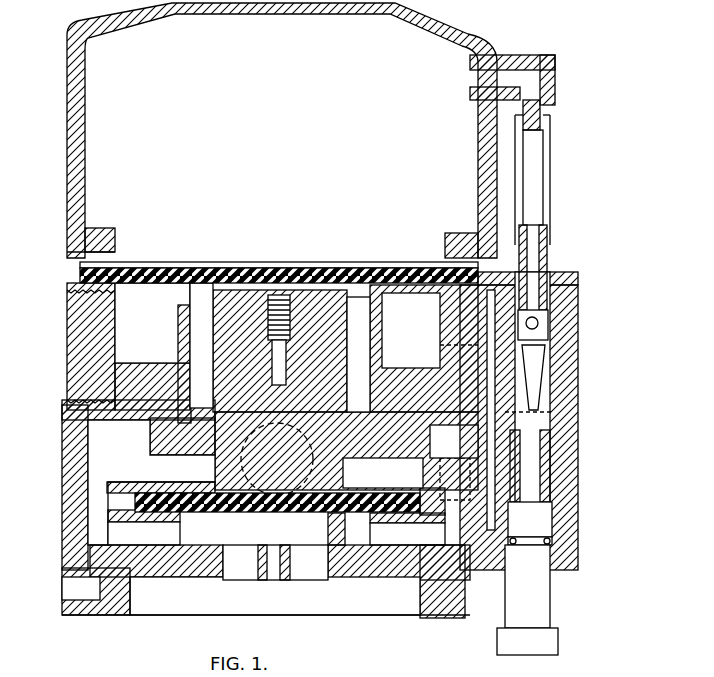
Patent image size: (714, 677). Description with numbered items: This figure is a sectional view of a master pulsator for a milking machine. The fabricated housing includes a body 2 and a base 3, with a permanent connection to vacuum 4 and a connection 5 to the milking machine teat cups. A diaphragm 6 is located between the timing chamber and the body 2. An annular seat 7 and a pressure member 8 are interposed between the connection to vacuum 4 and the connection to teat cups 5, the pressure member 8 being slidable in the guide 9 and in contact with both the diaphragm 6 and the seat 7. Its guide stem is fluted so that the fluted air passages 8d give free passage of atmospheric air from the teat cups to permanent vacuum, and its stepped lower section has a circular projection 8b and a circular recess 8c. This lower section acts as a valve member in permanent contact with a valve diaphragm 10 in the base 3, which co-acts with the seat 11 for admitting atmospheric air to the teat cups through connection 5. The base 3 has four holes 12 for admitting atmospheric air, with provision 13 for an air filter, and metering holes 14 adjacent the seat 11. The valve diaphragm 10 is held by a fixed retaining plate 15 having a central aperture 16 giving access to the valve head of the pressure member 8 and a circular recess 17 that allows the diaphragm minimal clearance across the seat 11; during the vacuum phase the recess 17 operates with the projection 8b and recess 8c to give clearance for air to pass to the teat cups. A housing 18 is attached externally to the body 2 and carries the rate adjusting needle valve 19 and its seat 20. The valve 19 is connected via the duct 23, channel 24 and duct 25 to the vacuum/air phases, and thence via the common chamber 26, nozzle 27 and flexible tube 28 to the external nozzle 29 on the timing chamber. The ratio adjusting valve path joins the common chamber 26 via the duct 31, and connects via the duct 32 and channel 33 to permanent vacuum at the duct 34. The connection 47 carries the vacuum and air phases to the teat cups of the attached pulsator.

The body 2 is at (62, 474).
The base 3 is at (62, 572).
The connection to vacuum 4 is at (67, 357).
The connection to teat cups 5 is at (277, 459).
The diaphragm 6 is at (215, 262).
The annular seat 7 is at (175, 395).
The pressure member 8 is at (244, 391).
The circular projection 8b is at (205, 500).
The circular recess 8c is at (215, 470).
The fluted air passages 8d is at (200, 300).
The guide 9 is at (180, 330).
The valve diaphragm 10 is at (292, 500).
The seat 11 is at (338, 520).
The holes 12 is at (312, 580).
The provision for air filter attachment 13 is at (272, 580).
The metering holes 14 is at (100, 535).
The retaining plate 15 is at (415, 492).
The central aperture 16 is at (205, 512).
The circular recess 17 is at (360, 490).
The housing 18 is at (575, 510).
The rate adjusting needle valve 19 is at (545, 408).
The seat 20 is at (548, 372).
The duct 23 is at (520, 400).
The channel 24 is at (440, 263).
The duct 25 is at (468, 452).
The common chamber 26 is at (548, 318).
The nozzle 27 is at (547, 258).
The flexible tube 28 is at (550, 158).
The external nozzle 29 is at (555, 78).
The duct 31 is at (538, 323).
The duct 32 is at (548, 432).
The channel 33 is at (460, 370).
The duct 34 is at (448, 340).
The connection 47 is at (440, 478).